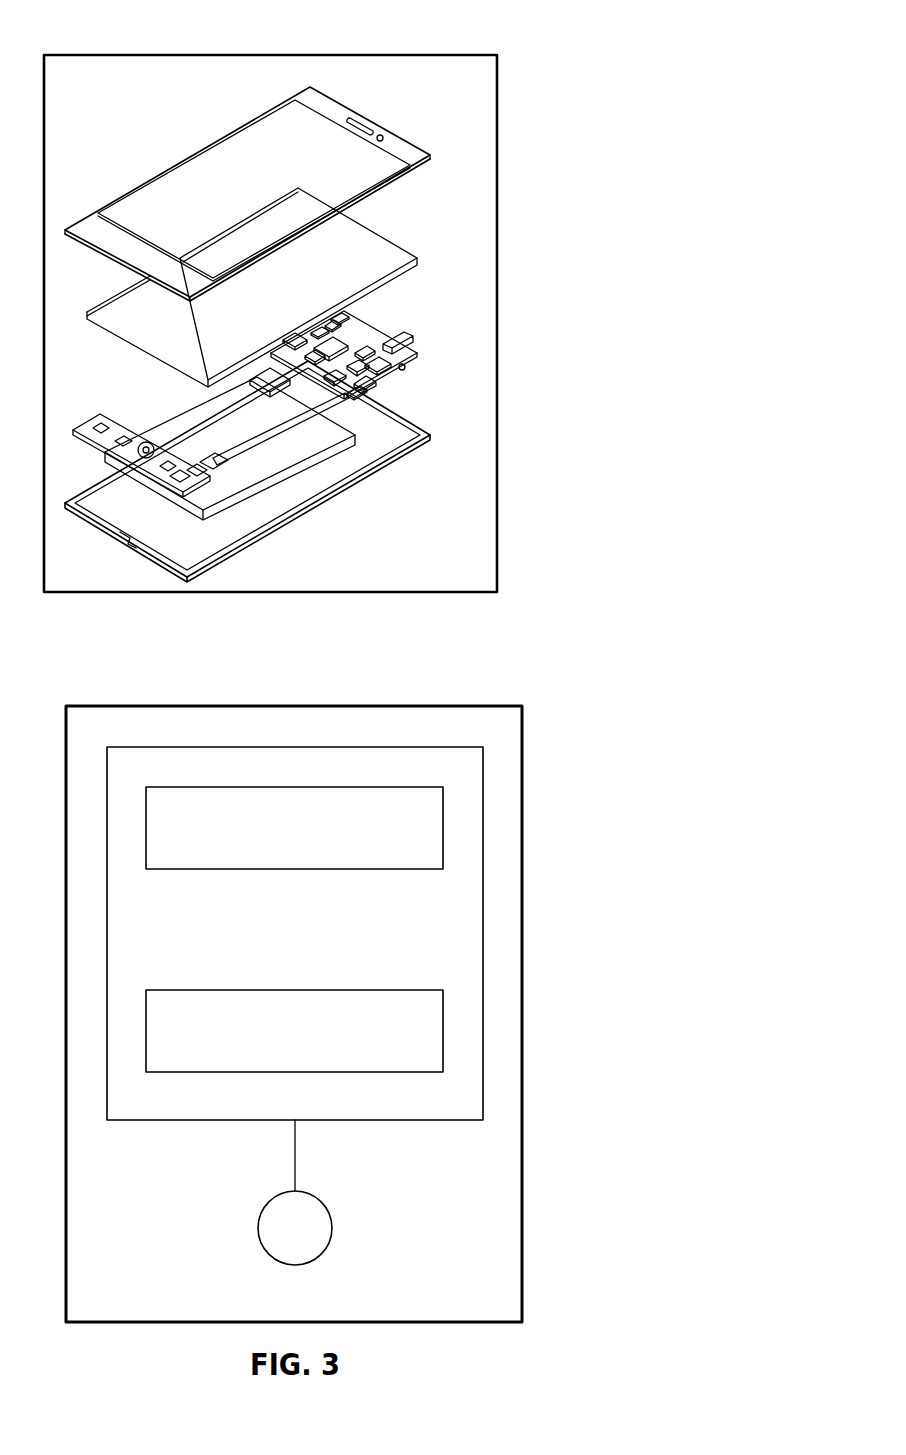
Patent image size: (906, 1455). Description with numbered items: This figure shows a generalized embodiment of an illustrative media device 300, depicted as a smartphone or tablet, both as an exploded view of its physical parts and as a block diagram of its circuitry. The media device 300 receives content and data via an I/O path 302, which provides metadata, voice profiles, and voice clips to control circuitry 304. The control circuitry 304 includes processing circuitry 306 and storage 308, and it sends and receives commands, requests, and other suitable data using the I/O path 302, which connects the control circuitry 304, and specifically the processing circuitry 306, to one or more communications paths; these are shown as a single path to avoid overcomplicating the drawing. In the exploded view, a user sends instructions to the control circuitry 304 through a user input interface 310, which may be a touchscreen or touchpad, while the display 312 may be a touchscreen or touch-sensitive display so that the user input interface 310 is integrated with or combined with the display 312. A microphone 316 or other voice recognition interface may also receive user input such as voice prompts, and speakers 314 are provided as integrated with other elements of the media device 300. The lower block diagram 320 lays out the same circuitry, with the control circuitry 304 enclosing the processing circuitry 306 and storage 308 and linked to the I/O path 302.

The media device 300 is at (140, 45).
The I/O path 302 is at (129, 452).
The control circuitry 304 is at (399, 384).
The processing circuitry 306 is at (391, 366).
The storage 308 is at (343, 344).
The user input interface 310 is at (392, 167).
The display 312 is at (394, 262).
The speakers 314 is at (357, 112).
The microphone 316 is at (395, 143).
The block diagram of user equipment device 320 is at (134, 704).